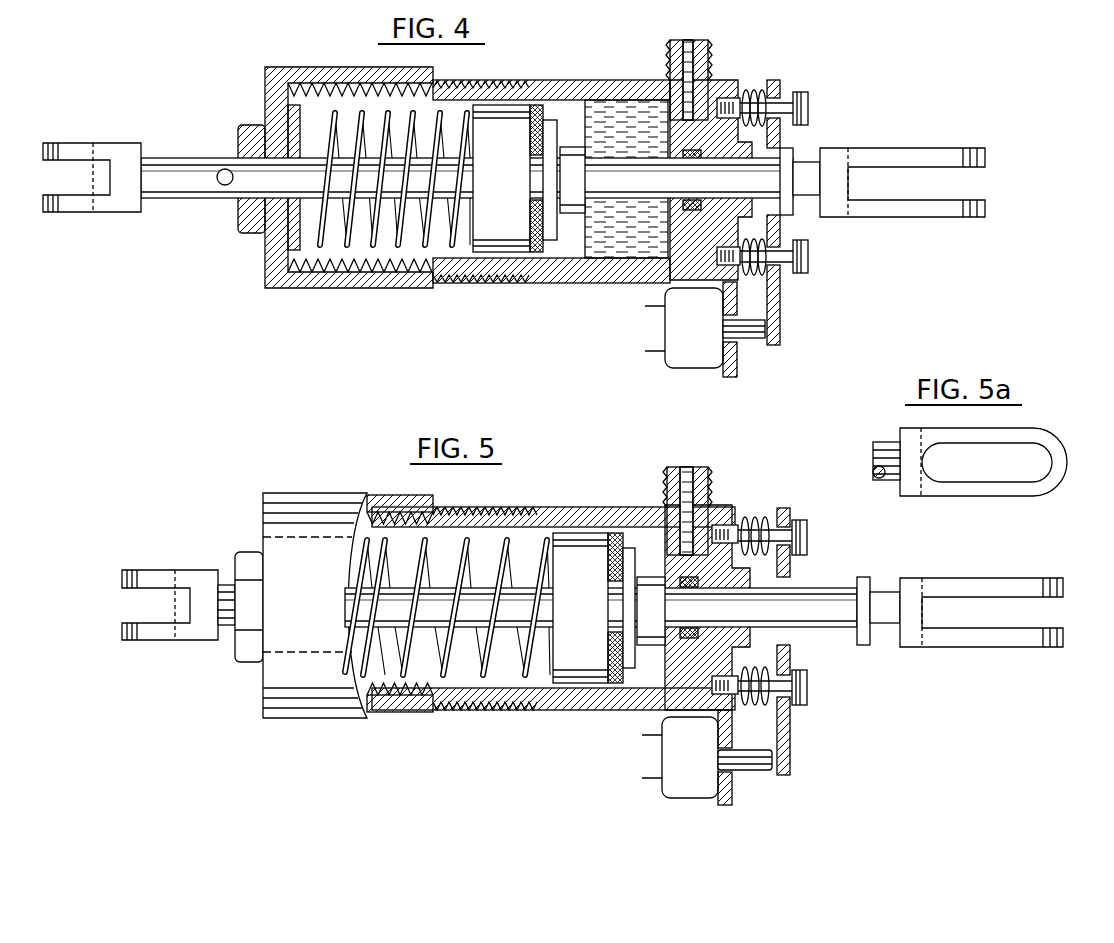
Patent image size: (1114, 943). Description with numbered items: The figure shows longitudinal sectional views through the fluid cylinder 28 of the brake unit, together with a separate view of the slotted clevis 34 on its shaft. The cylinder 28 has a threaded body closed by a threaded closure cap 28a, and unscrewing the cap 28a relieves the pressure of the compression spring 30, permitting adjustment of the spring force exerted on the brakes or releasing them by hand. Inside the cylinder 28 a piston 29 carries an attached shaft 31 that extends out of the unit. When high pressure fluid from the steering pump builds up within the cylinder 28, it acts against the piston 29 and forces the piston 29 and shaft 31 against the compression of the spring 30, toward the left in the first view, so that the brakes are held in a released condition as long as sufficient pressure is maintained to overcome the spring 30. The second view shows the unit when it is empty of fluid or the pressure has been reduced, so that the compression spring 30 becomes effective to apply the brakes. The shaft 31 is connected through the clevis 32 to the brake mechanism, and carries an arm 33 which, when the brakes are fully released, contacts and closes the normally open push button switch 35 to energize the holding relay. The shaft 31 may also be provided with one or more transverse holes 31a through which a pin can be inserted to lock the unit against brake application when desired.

In FIG. 4, the cylinder 28 is at (578, 283).
In FIG. 5, the cylinder 28 is at (523, 710).
In FIG. 4, the threaded closure cap 28a is at (288, 288).
In FIG. 5, the threaded closure cap 28a is at (307, 718).
In FIG. 4, the piston 29 is at (488, 252).
In FIG. 5, the piston 29 is at (585, 683).
In FIG. 4, the compression spring 30 is at (343, 248).
In FIG. 5, the compression spring 30 is at (447, 675).
In FIG. 4, the shaft 31 is at (167, 198).
In FIG. 5, the shaft 31 is at (822, 632).
In FIG. 4, the transverse holes 31a is at (220, 171).
In FIG. 5, the clevis 32 is at (130, 640).
In FIG. 4, the arm 33 is at (780, 295).
In FIG. 5, the arm 33 is at (790, 723).
In FIG. 4, the clevis 34 is at (978, 217).
In FIG. 5, the clevis 34 is at (1047, 647).
In FIG. 5a, the clevis 34 is at (1060, 485).
In FIG. 4, the switch 35 is at (668, 368).
In FIG. 5, the switch 35 is at (672, 797).